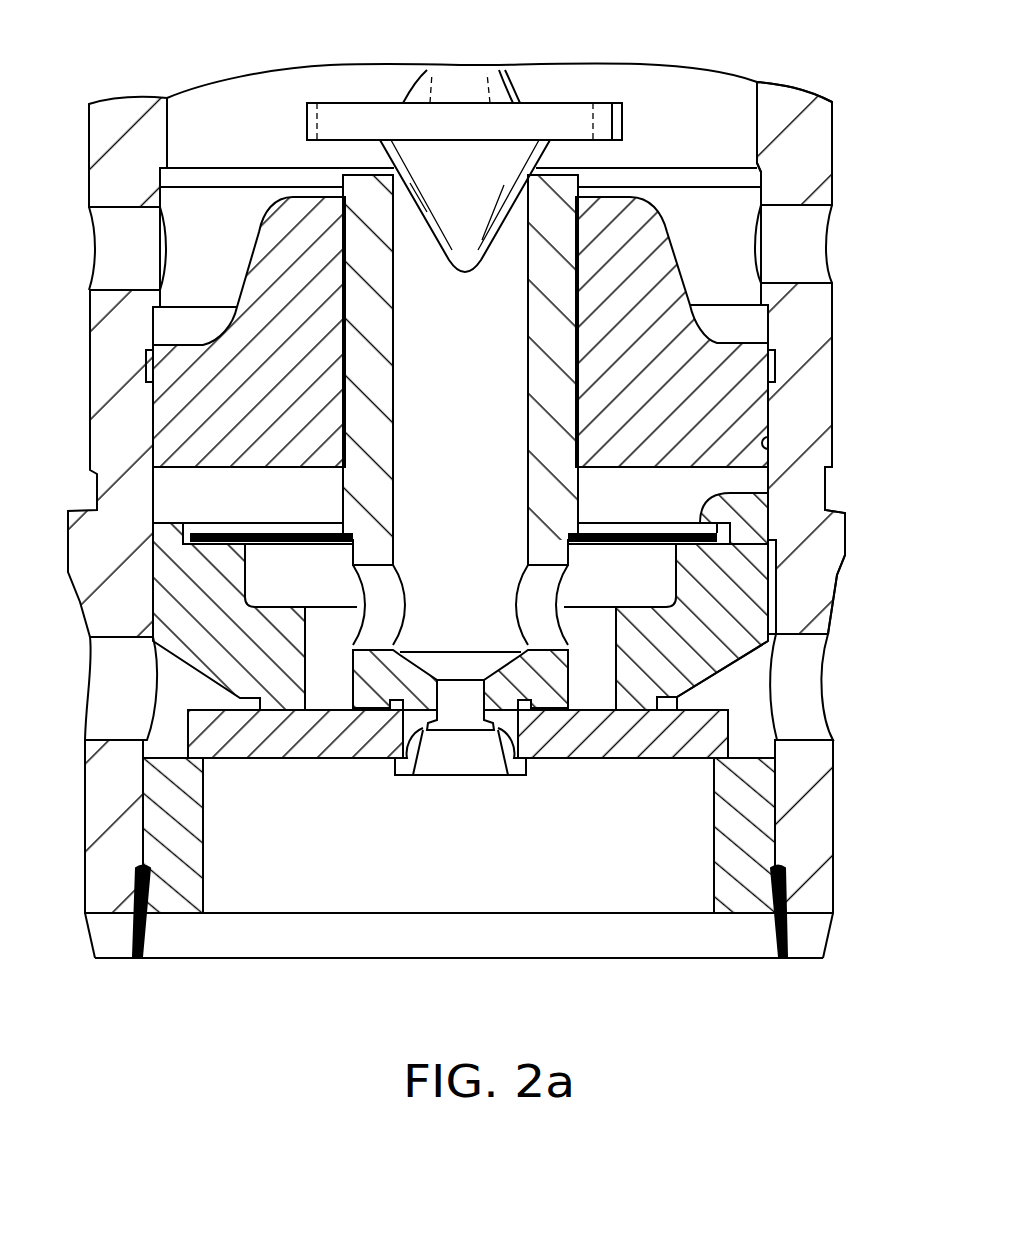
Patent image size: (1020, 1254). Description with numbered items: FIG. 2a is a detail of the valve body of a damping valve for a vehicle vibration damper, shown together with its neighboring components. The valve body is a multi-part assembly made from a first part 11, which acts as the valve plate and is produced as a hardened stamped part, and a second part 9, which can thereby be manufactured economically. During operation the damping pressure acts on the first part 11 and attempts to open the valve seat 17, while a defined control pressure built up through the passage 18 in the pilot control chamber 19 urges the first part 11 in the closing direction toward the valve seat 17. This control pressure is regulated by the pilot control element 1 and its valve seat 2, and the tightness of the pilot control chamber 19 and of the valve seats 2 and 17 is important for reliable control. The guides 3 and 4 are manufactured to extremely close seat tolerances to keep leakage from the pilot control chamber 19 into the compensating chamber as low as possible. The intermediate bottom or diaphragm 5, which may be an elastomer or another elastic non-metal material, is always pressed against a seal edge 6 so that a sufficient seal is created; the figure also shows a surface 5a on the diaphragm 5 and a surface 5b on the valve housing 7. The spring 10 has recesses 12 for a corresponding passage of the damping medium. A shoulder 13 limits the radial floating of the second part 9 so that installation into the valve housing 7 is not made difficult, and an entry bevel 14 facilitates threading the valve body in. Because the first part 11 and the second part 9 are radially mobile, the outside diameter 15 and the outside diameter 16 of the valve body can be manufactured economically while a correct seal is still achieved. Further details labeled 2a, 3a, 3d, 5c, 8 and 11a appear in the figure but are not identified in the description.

The pilot control element 1 is at (448, 170).
The valve seat 2 is at (512, 172).
The bore 2a is at (575, 340).
The guide 3 is at (600, 294).
The threaded end of valve stem 3a is at (495, 755).
The valve stem 3d is at (547, 278).
The guide 4 is at (772, 580).
The intermediate bottom or diaphragm 5 is at (700, 415).
The surface 5a is at (770, 430).
The surface 5b is at (770, 443).
The retaining ring 5c is at (740, 355).
The seal edge 6 is at (762, 345).
The valve housing 7 is at (122, 432).
The annular gap 8 is at (345, 436).
The second part of the valve body 9 is at (722, 637).
The spring 10 is at (770, 492).
The first part of the valve body 11 is at (648, 730).
The central opening 11a is at (510, 743).
The recesses 12 is at (250, 538).
The shoulder 13 is at (727, 537).
The entry bevel 14 is at (783, 940).
The outside diameter 15 is at (340, 340).
The outside diameter 16 is at (163, 584).
The valve seat 17 is at (735, 775).
The passage 18 is at (452, 705).
The pilot control chamber 19 is at (338, 585).